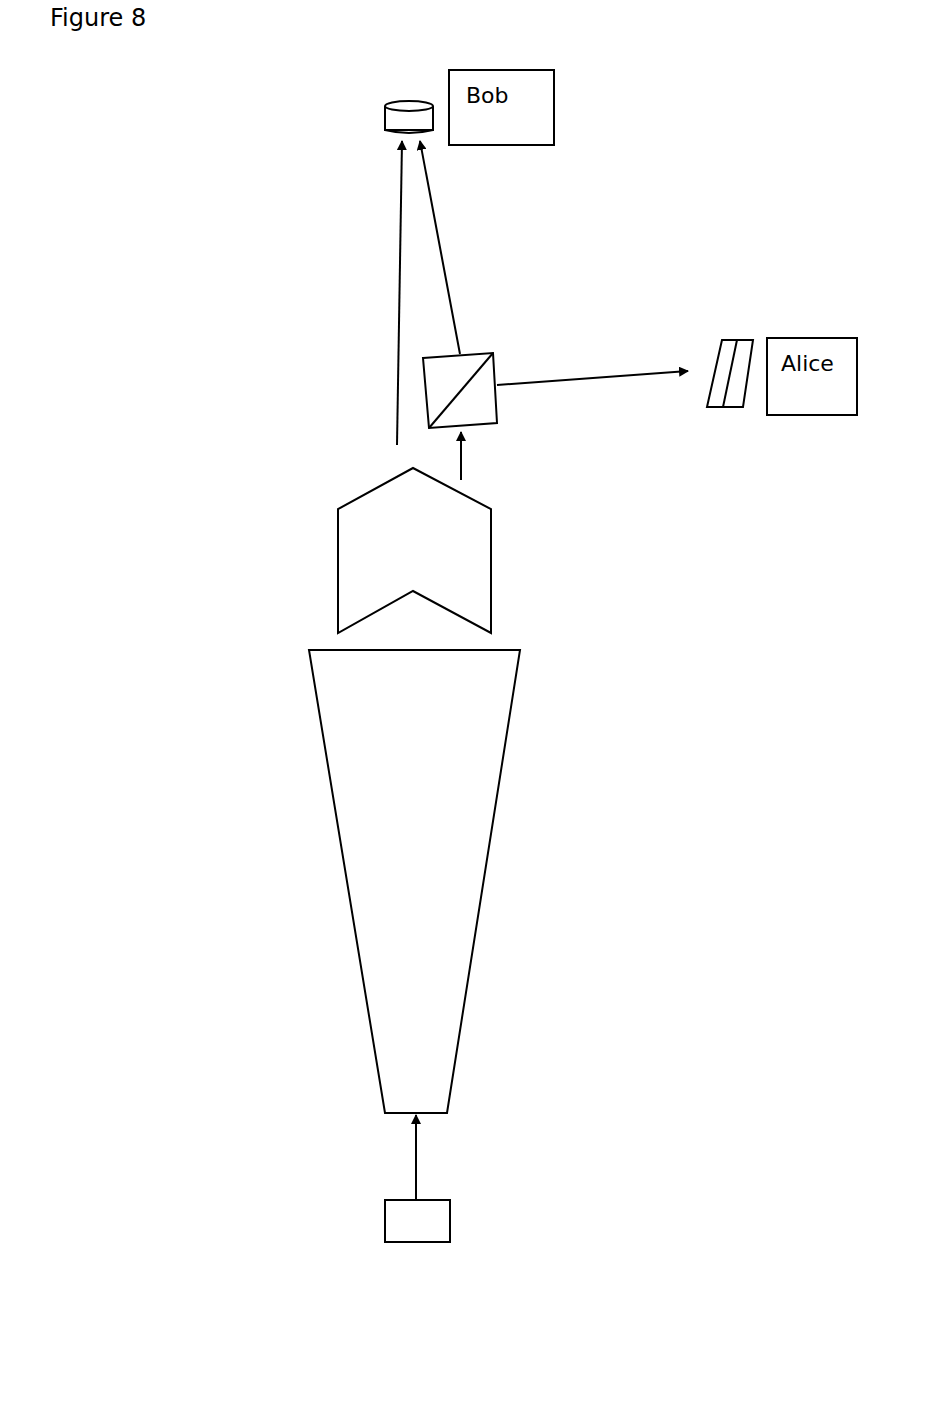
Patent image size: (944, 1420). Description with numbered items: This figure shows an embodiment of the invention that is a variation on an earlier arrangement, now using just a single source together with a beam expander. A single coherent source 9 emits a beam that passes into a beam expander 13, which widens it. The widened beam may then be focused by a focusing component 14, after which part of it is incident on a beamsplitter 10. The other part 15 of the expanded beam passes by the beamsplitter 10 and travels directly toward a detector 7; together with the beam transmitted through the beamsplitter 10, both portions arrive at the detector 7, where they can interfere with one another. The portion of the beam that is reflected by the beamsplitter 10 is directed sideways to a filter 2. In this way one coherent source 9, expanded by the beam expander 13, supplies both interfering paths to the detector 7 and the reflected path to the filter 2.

The detector 7 is at (409, 84).
The other part of the expanded beam 15 is at (377, 293).
The beamsplitter 10 is at (554, 310).
The filter 2 is at (730, 400).
The focusing component 14 is at (414, 550).
The beam expander 13 is at (414, 881).
The coherent source 9 is at (417, 1203).